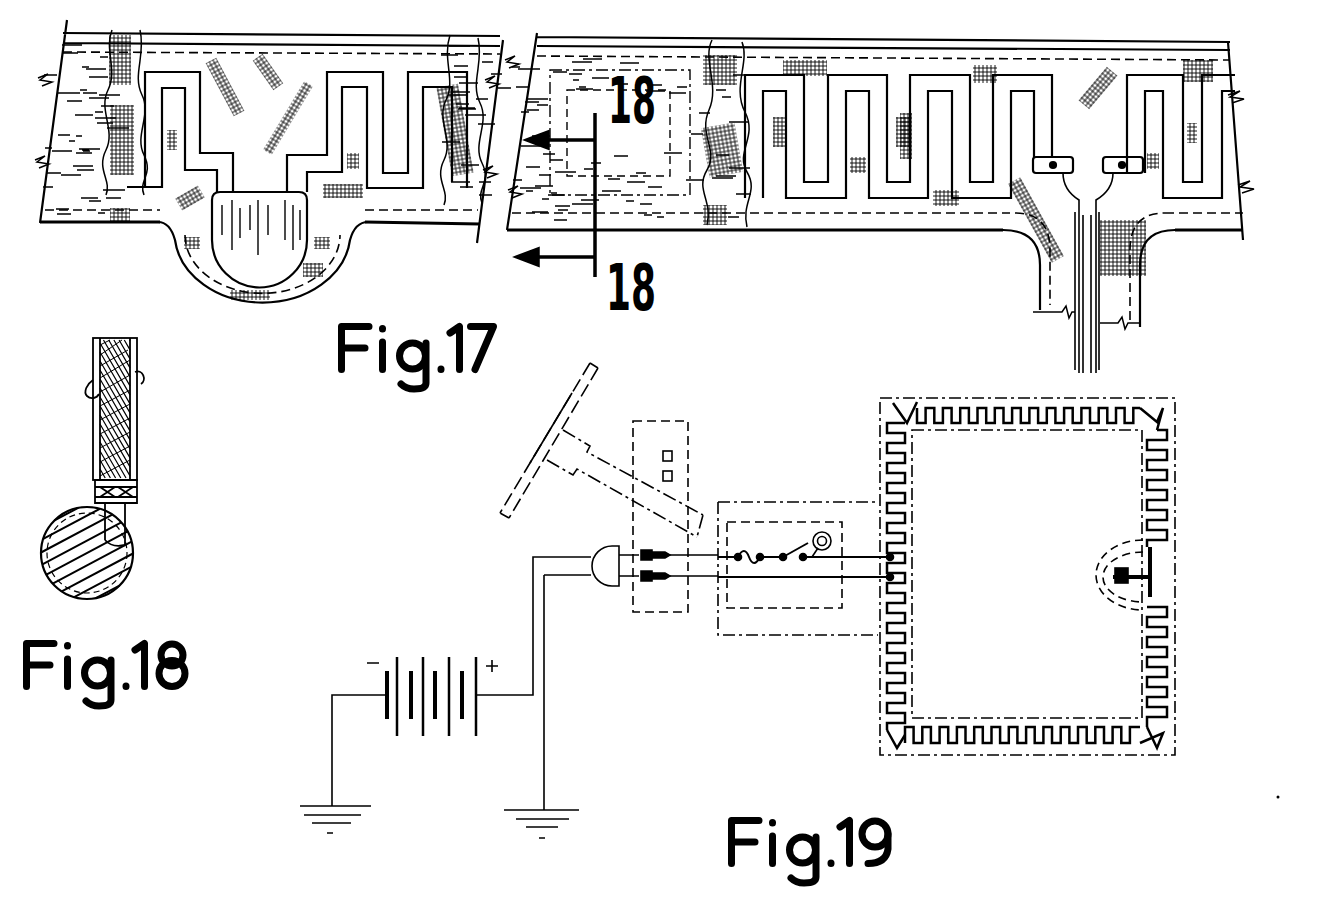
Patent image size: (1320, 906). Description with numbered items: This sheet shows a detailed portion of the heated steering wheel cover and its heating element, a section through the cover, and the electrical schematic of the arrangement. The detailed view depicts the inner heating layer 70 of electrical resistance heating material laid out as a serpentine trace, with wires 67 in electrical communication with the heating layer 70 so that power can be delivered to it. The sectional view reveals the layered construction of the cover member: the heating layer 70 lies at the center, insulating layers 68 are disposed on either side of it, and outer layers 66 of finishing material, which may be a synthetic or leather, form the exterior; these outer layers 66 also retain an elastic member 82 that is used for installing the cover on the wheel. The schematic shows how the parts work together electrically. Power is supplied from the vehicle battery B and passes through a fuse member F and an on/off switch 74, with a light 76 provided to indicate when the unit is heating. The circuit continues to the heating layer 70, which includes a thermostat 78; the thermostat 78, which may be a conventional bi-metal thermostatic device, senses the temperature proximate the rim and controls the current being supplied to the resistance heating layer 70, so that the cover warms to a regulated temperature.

In FIG. 17, the heating layer 70 is at (758, 192).
In FIG. 18, the heating layer 70 is at (130, 393).
In FIG. 19, the heating layer 70 is at (1140, 523).
In FIG. 17, the thermostat 78 is at (264, 253).
In FIG. 19, the thermostat 78 is at (1180, 567).
In FIG. 17, the wires 67 is at (1078, 338).
In FIG. 18, the insulating layers 68 is at (140, 350).
In FIG. 18, the outer layers 66 is at (131, 447).
In FIG. 18, the elastic member 82 is at (137, 543).
In FIG. 19, the on/off switch 74 is at (789, 545).
In FIG. 19, the light 76 is at (827, 532).
In FIG. 19, the vehicle battery B is at (431, 640).
In FIG. 19, the fuse member F is at (747, 535).